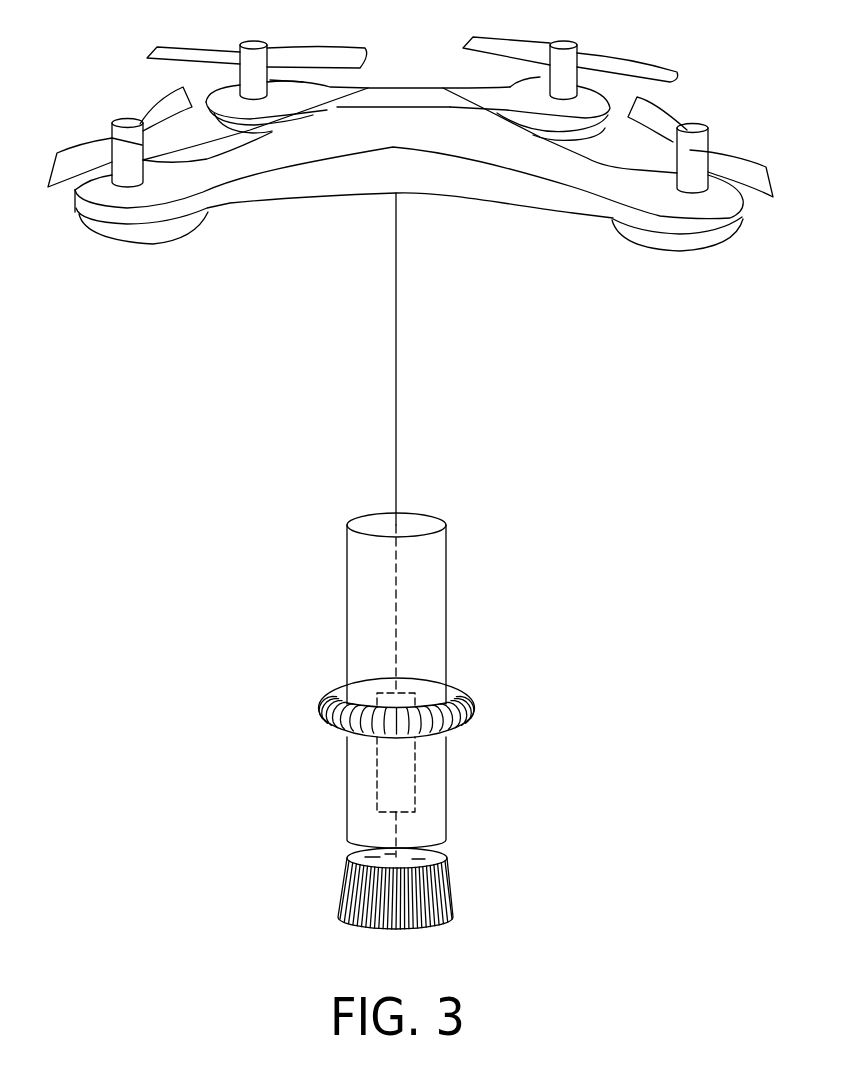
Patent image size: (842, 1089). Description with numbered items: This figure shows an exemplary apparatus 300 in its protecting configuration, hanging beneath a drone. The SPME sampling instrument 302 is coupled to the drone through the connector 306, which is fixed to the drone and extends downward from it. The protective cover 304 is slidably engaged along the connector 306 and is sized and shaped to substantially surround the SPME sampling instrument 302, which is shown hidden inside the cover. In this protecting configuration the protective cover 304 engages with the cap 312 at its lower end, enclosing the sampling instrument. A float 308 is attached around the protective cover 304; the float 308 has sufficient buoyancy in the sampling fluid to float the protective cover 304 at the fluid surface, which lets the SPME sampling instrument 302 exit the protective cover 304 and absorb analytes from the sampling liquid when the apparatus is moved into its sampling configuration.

The apparatus 300 is at (419, 716).
The SPME sampling instrument 302 is at (405, 786).
The protective cover 304 is at (446, 612).
The connector 306 is at (396, 358).
The float 308 is at (318, 705).
The cap 312 is at (450, 888).